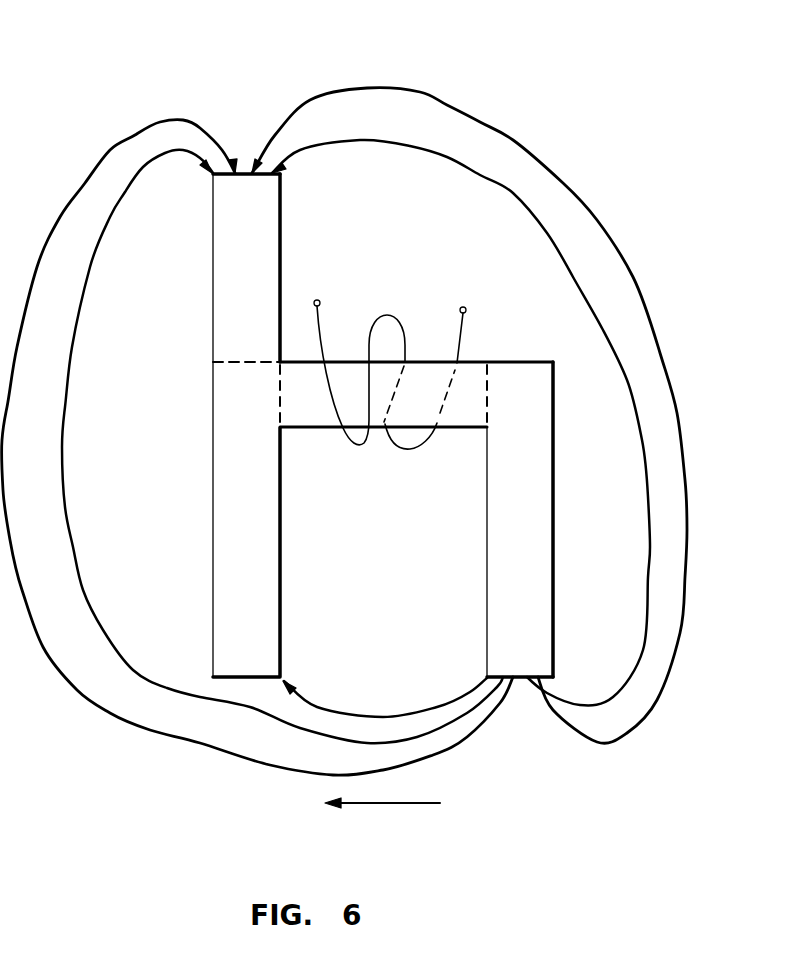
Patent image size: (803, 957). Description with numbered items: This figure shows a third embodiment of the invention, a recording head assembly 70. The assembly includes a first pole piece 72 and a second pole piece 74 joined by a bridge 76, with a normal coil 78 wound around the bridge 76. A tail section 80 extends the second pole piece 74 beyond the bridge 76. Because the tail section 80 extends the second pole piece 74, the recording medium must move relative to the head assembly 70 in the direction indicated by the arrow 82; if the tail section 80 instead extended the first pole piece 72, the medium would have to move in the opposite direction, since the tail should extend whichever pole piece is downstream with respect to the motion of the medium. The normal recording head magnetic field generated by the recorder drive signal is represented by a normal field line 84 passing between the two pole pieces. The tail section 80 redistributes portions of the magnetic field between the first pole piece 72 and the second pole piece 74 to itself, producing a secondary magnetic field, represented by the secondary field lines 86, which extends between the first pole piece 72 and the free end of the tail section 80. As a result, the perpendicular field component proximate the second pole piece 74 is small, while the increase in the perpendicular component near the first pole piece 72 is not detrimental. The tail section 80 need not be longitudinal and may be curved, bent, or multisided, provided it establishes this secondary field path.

The recording head assembly 70 is at (533, 122).
The first pole piece 72 is at (553, 578).
The second pole piece 74 is at (213, 588).
The bridge 76 is at (470, 362).
The normal coil 78 is at (468, 318).
The tail section 80 is at (280, 220).
The arrow 82 is at (398, 805).
The normal field line 84 is at (375, 717).
The secondary field lines 86 is at (152, 162).